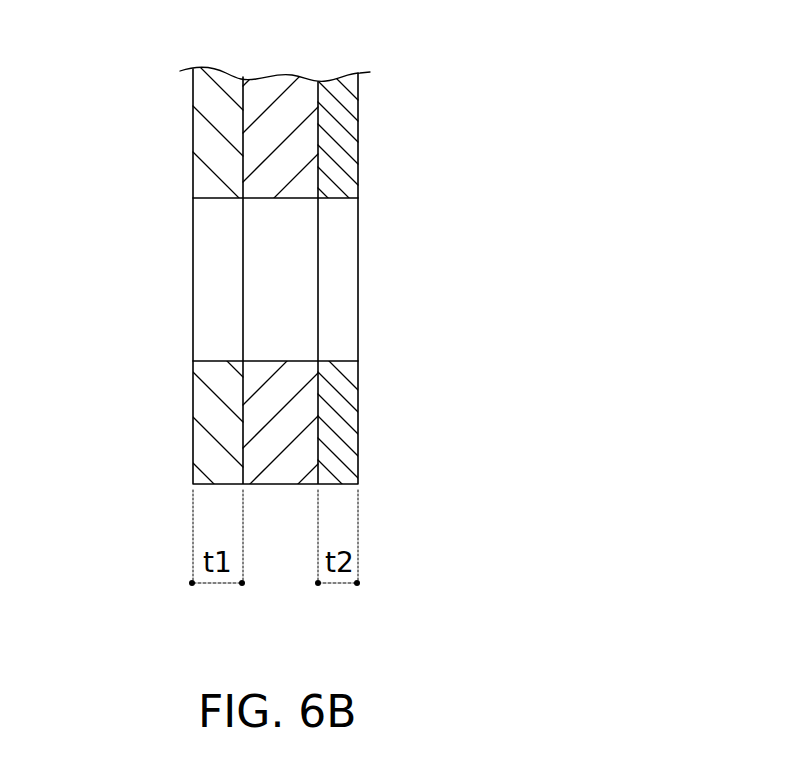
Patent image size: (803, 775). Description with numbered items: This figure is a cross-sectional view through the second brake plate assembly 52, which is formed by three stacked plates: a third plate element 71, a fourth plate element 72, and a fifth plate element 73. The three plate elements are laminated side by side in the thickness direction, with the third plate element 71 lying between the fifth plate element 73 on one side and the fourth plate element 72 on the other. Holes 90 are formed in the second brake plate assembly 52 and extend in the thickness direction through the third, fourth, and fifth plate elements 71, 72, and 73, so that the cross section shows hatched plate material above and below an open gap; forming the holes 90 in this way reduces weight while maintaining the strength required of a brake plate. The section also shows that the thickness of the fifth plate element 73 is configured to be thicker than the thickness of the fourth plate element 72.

The second brake plate assembly 52 is at (392, 106).
The holes 90 is at (268, 198).
The third plate element 71 is at (281, 492).
The fourth plate element 72 is at (363, 462).
The fifth plate element 73 is at (186, 460).